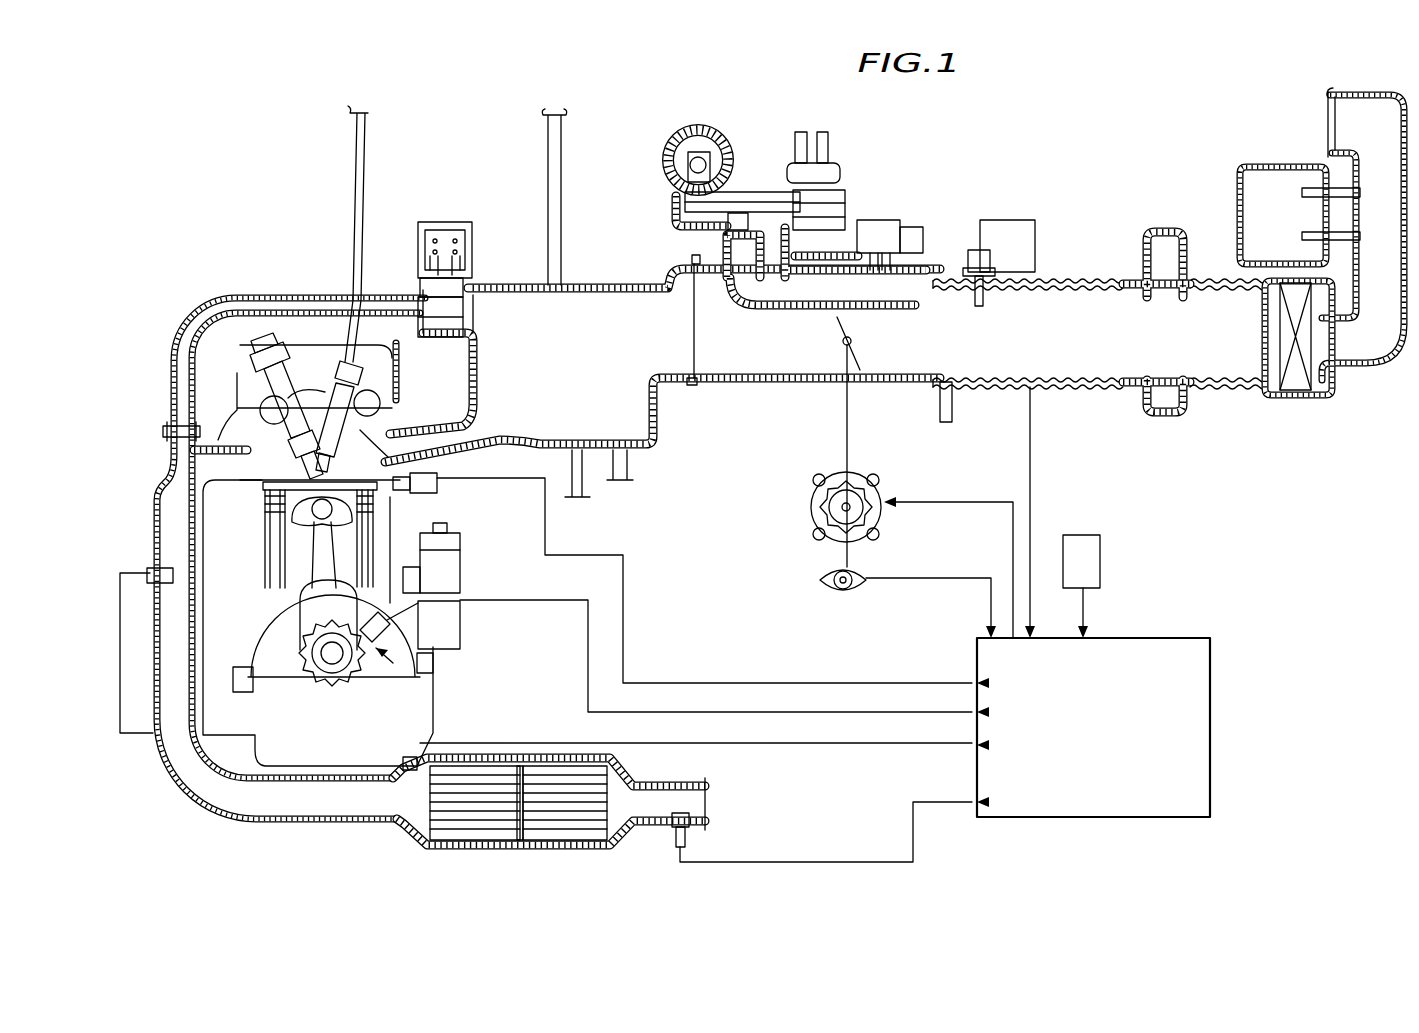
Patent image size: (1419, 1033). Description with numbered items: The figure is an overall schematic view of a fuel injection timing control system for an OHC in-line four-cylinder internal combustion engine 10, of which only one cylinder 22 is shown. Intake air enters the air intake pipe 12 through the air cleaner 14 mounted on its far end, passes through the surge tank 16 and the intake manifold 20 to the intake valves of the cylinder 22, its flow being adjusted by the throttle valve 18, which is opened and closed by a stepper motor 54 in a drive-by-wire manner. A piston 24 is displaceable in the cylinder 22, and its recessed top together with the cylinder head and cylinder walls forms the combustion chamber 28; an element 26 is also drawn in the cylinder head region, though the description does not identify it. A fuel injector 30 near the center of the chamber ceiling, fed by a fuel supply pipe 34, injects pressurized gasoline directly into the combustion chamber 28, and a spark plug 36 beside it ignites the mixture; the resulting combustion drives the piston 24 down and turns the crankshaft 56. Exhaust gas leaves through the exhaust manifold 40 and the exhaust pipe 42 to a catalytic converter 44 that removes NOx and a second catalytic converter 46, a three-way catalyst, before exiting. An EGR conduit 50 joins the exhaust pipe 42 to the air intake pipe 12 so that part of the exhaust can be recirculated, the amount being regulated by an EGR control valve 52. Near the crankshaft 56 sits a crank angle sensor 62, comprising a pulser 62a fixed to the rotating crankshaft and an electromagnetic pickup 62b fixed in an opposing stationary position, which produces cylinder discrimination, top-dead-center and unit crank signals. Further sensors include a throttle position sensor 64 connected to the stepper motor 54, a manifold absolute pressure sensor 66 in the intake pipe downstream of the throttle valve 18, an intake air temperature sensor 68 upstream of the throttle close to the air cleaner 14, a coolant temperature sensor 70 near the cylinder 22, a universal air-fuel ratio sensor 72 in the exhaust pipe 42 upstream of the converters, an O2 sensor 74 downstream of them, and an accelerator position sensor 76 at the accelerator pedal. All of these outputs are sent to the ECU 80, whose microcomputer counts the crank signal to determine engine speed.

The internal combustion engine 10 is at (668, 522).
The air intake pipe 12 is at (737, 384).
The air cleaner 14 is at (1300, 392).
The surge tank 16 is at (1160, 392).
The throttle valve 18 is at (836, 322).
The intake manifold 20 is at (414, 417).
The cylinder 22 is at (298, 560).
The piston 24 is at (290, 528).
The exhaust port 26 is at (247, 422).
The combustion chamber 28 is at (272, 495).
The fuel injector 30 is at (393, 390).
The fuel supply pipe 34 is at (354, 188).
The spark plug 36 is at (238, 345).
The exhaust manifold 40 is at (190, 442).
The exhaust pipe 42 is at (186, 779).
The catalytic converter 44 is at (488, 842).
The second catalytic converter 46 is at (580, 843).
The EGR conduit 50 is at (255, 293).
The EGR control valve 52 is at (470, 300).
The stepper motor 54 is at (882, 516).
The crankshaft 56 is at (322, 652).
The crank angle sensor 62 is at (392, 668).
The pulser 62a is at (356, 690).
The electromagnetic pickup 62b is at (395, 642).
The throttle position sensor 64 is at (845, 596).
The manifold absolute pressure sensor 66 is at (880, 222).
The intake air temperature sensor 68 is at (972, 252).
The coolant temperature sensor 70 is at (430, 493).
The universal air-fuel ratio sensor 72 is at (152, 568).
The O2 sensor 74 is at (672, 842).
The accelerator position sensor 76 is at (1100, 555).
The ECU 80 is at (1128, 637).